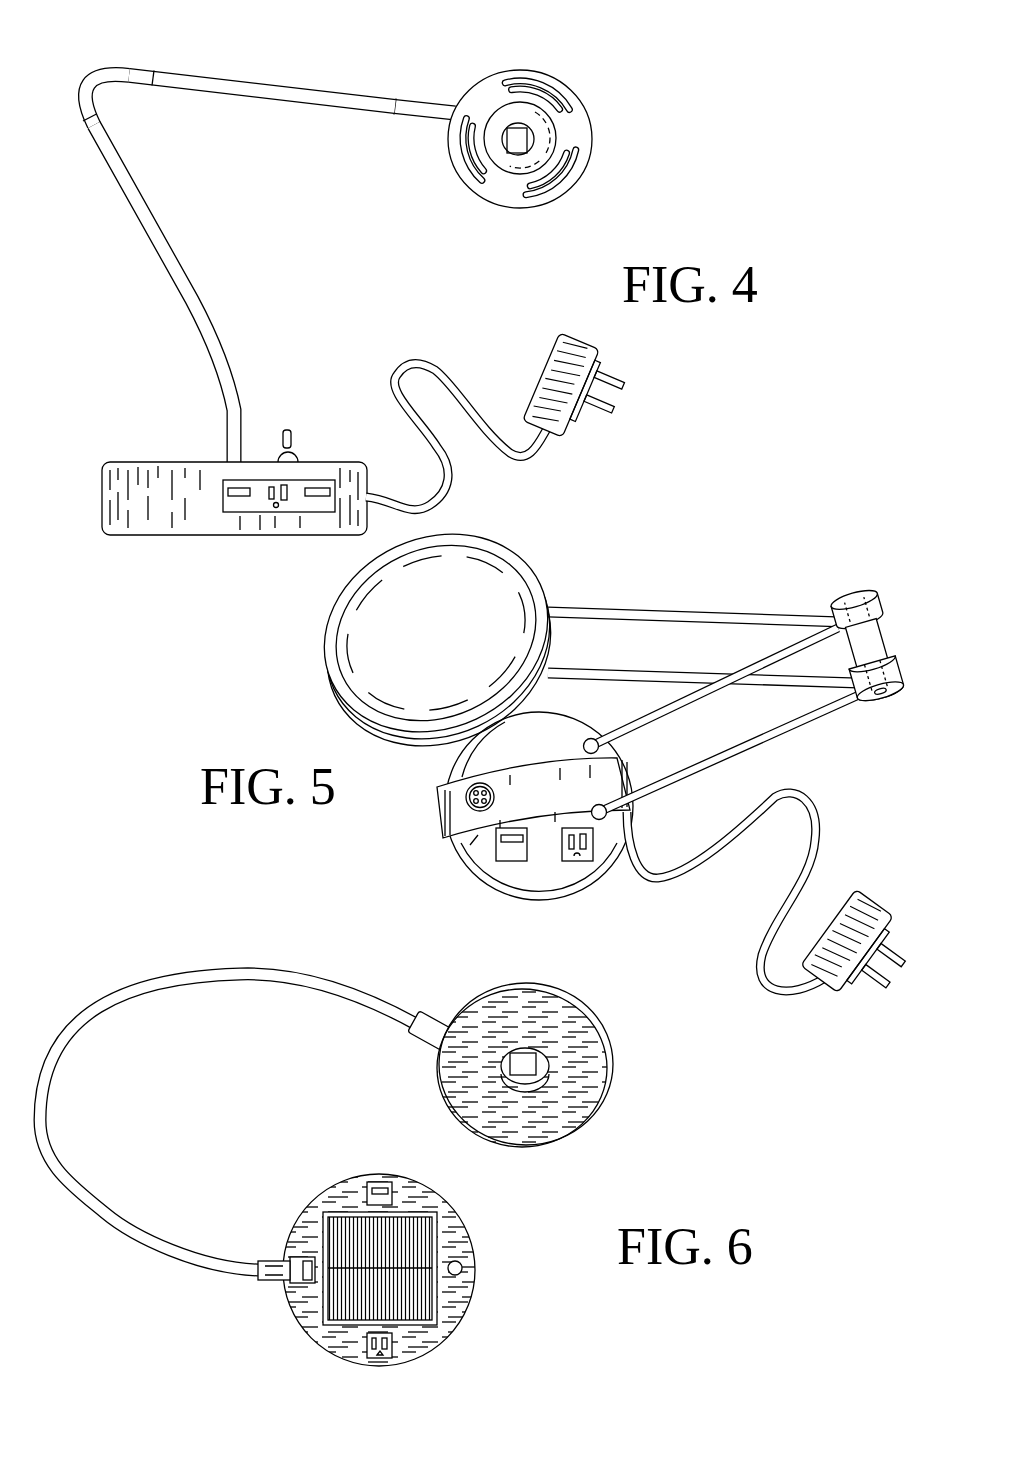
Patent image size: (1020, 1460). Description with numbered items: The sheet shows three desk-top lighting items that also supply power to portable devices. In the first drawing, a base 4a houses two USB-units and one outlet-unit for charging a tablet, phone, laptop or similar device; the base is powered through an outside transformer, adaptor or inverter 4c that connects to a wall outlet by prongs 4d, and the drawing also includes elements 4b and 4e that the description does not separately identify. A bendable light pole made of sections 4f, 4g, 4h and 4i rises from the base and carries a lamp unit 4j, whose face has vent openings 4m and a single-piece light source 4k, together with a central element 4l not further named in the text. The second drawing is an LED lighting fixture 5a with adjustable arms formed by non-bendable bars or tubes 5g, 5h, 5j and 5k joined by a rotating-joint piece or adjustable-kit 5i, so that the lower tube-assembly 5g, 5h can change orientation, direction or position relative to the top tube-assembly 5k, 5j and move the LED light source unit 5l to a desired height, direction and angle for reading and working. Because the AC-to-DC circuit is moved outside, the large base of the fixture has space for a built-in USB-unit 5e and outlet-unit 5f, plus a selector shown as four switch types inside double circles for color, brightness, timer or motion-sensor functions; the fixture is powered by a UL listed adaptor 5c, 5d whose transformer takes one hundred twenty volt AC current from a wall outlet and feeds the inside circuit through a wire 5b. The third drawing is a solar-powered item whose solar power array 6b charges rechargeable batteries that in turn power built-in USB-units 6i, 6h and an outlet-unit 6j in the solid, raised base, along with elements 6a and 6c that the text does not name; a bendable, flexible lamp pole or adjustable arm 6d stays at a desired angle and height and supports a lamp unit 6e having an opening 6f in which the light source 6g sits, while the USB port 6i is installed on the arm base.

In FIG. 4, the base 4a is at (178, 525).
In FIG. 4, the power cord 4b is at (395, 378).
In FIG. 4, the outside transformer, adaptor, or inverter 4c is at (545, 360).
In FIG. 4, the prongs 4d is at (628, 392).
In FIG. 4, the switch button 4e is at (287, 428).
In FIG. 4, the light pole section 4f is at (150, 222).
In FIG. 4, the light pole section 4g is at (110, 96).
In FIG. 4, the light pole section 4h is at (270, 94).
In FIG. 4, the light pole section 4i is at (425, 99).
In FIG. 4, the lamp unit 4j is at (495, 195).
In FIG. 4, the light source 4k is at (516, 128).
In FIG. 4, the central light opening 4l is at (531, 137).
In FIG. 4, the vent openings 4m is at (560, 188).
In FIG. 5, the LED lighting fixture 5a is at (458, 848).
In FIG. 5, the wire 5b is at (640, 862).
In FIG. 5, the UL listed adaptor (outside LED desk lamp transformer) 5c is at (870, 893).
In FIG. 5, the UL listed adaptor 5d is at (888, 978).
In FIG. 5, the USB-unit 5e is at (503, 852).
In FIG. 5, the outlet-unit 5f is at (576, 858).
In FIG. 5, the bar (lower tube-assembly) 5g is at (798, 728).
In FIG. 5, the bar (lower tube-assembly) 5h is at (683, 700).
In FIG. 5, the adjustable-kit (rotating-joint piece) 5i is at (852, 600).
In FIG. 5, the bar (top tube-assembly) 5j is at (665, 672).
In FIG. 5, the bar (top tube-assembly) 5k is at (625, 612).
In FIG. 5, the LED light source unit 5l is at (528, 592).
In FIG. 6, the base 6a is at (455, 1300).
In FIG. 6, the solar power array 6b is at (335, 1305).
In FIG. 6, the switch button 6c is at (462, 1268).
In FIG. 6, the lamp pole (adjustable arm) 6d is at (205, 1255).
In FIG. 6, the lamp unit 6e is at (440, 1078).
In FIG. 6, the opening 6f is at (528, 1082).
In FIG. 6, the light source 6g is at (518, 1066).
In FIG. 6, the USB-unit 6h is at (370, 1200).
In FIG. 6, the USB-unit (USB port) 6i is at (295, 1258).
In FIG. 6, the outlet-unit 6j is at (392, 1352).